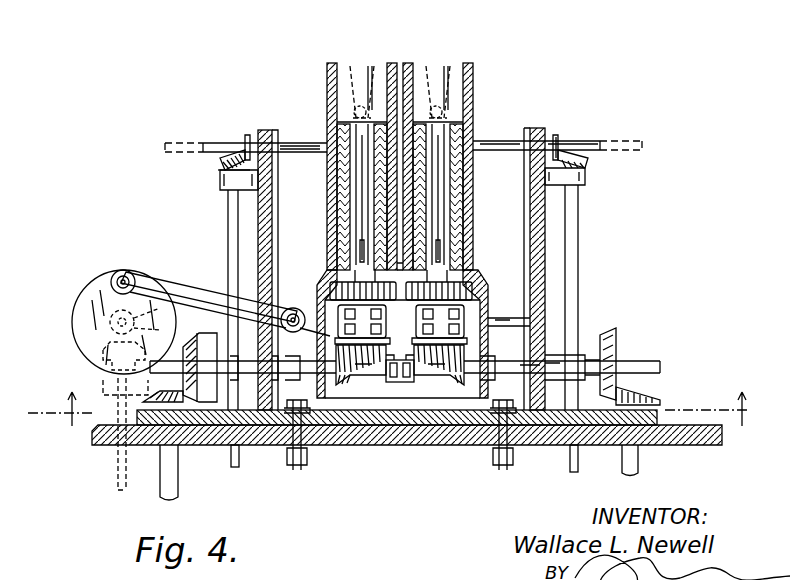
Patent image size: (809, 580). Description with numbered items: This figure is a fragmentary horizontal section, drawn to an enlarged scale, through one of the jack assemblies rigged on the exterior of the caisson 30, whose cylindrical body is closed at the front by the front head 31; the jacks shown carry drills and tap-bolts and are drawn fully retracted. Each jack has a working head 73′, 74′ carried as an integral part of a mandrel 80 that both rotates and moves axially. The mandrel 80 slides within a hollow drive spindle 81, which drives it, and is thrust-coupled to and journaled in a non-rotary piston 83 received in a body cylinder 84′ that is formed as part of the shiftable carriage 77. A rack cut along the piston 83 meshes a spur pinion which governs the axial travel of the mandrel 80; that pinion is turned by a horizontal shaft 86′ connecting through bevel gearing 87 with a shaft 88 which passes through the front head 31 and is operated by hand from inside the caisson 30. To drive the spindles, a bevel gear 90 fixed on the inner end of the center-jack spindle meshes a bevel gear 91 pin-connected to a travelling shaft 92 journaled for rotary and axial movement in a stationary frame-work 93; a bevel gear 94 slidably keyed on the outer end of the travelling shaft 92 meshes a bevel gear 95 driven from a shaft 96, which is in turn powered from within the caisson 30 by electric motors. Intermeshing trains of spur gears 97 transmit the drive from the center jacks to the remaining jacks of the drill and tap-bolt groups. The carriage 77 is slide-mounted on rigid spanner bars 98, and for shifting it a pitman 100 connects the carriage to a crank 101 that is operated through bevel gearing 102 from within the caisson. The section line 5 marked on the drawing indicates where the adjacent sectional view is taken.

The working head 74′ is at (348, 62).
The working head 73′ is at (430, 62).
The body cylinder 84′ is at (327, 110).
The bevel gearing 87 is at (238, 150).
The horizontal shaft 86′ is at (300, 152).
The non-rotary piston 83 is at (340, 186).
The hollow drive spindle 81 is at (345, 204).
The mandrel 80 is at (358, 221).
The shaft 88 is at (228, 202).
The shiftable carriage 77 is at (322, 284).
The spur gears 97 is at (318, 292).
The spanner bars 98 is at (515, 318).
The stationary frame-work 93 is at (548, 283).
The bevel gear 90 is at (470, 344).
The crank 101 is at (95, 285).
The pitman 100 is at (205, 292).
The bevel gearing 102 is at (100, 345).
The bevel gear 94 is at (200, 352).
The bevel gear 95 is at (645, 403).
The bevel gear 91 is at (342, 382).
The travelling shaft 92 is at (414, 383).
The caisson 30 is at (418, 446).
The front head 31 is at (443, 445).
The shaft 96 is at (178, 471).
The section line 5- 5 is at (398, 405).